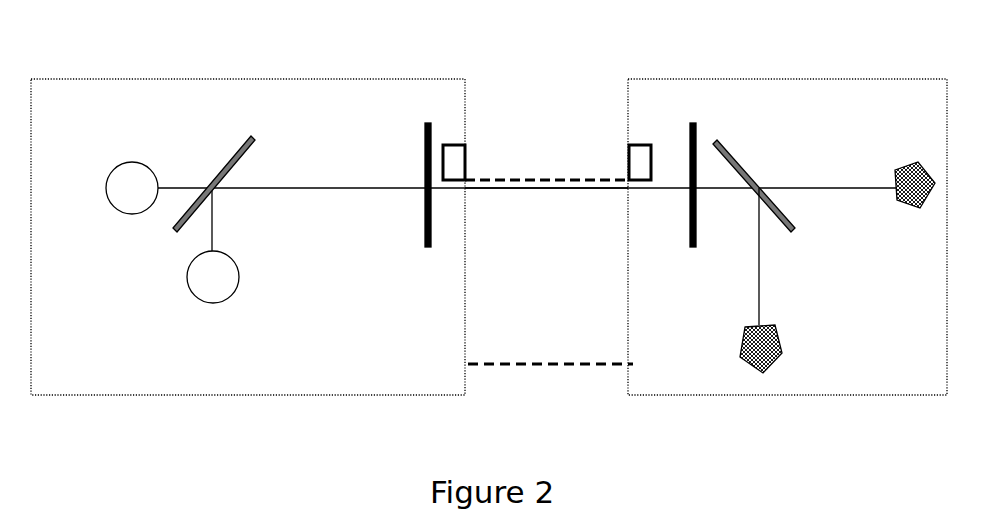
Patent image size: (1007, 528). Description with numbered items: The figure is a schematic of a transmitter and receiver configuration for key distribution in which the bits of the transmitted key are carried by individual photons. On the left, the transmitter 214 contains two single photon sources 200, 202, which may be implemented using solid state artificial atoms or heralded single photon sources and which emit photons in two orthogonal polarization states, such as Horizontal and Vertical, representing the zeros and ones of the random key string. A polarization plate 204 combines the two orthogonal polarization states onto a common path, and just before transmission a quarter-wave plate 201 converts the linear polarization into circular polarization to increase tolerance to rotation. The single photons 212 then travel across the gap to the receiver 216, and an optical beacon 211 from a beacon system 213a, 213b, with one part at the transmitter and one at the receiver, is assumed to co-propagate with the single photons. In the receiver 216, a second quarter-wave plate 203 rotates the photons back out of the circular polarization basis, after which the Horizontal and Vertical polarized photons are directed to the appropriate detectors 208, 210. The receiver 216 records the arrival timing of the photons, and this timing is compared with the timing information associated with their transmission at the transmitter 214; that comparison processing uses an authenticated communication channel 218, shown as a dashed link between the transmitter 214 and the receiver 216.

The single photon source 200 is at (137, 213).
The quarter-wave plate 201 is at (432, 221).
The single photon source 202 is at (236, 282).
The quarter-wave plate 203 is at (690, 145).
The polarization plate 204 is at (255, 143).
The detector 208 is at (778, 342).
The detector 210 is at (917, 210).
The optical beacon 211 is at (552, 178).
The single photons 212 is at (493, 189).
The beacon system 213a is at (454, 144).
The beacon system 213b is at (640, 144).
The transmitter 214 is at (340, 79).
The receiver 216 is at (820, 80).
The authenticated communication channel 218 is at (503, 364).